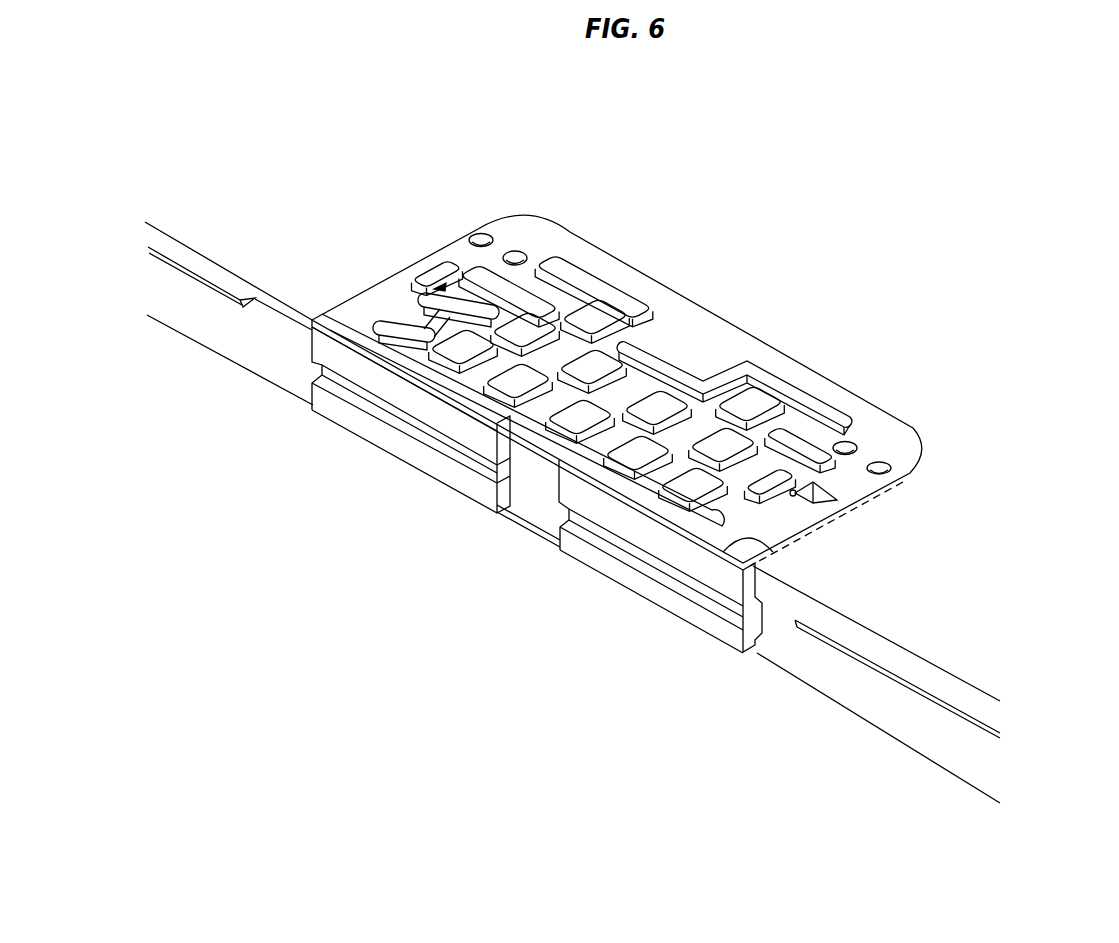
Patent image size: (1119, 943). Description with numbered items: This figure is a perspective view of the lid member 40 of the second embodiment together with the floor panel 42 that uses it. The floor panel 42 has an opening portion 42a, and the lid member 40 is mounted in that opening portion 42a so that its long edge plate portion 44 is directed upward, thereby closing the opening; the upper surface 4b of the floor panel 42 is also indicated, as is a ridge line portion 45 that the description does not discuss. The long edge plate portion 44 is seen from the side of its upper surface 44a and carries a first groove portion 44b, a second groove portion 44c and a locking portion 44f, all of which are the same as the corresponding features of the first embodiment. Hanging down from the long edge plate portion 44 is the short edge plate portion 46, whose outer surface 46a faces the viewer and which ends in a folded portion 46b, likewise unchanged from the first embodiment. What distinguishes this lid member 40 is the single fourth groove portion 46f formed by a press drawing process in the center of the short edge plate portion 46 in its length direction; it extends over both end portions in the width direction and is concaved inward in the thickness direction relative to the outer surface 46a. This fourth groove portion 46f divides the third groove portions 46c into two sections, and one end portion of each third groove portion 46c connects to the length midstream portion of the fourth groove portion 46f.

The lid member 40 is at (639, 467).
The floor panel 42 is at (217, 362).
The opening portion 42a is at (597, 553).
The long edge plate portion 44 is at (833, 390).
The upper surface 44a is at (582, 242).
The upper surface 4b is at (448, 165).
The first groove portion 44b is at (603, 290).
The second groove portion 44c is at (630, 342).
The locking portion 44f is at (837, 501).
The ridge line portion 45 is at (782, 568).
The short edge plate portion 46 is at (353, 421).
The outer surface 46a is at (462, 427).
The folded portion 46b is at (762, 655).
The third groove portions 46c is at (695, 582).
The fourth groove portion 46f is at (533, 508).